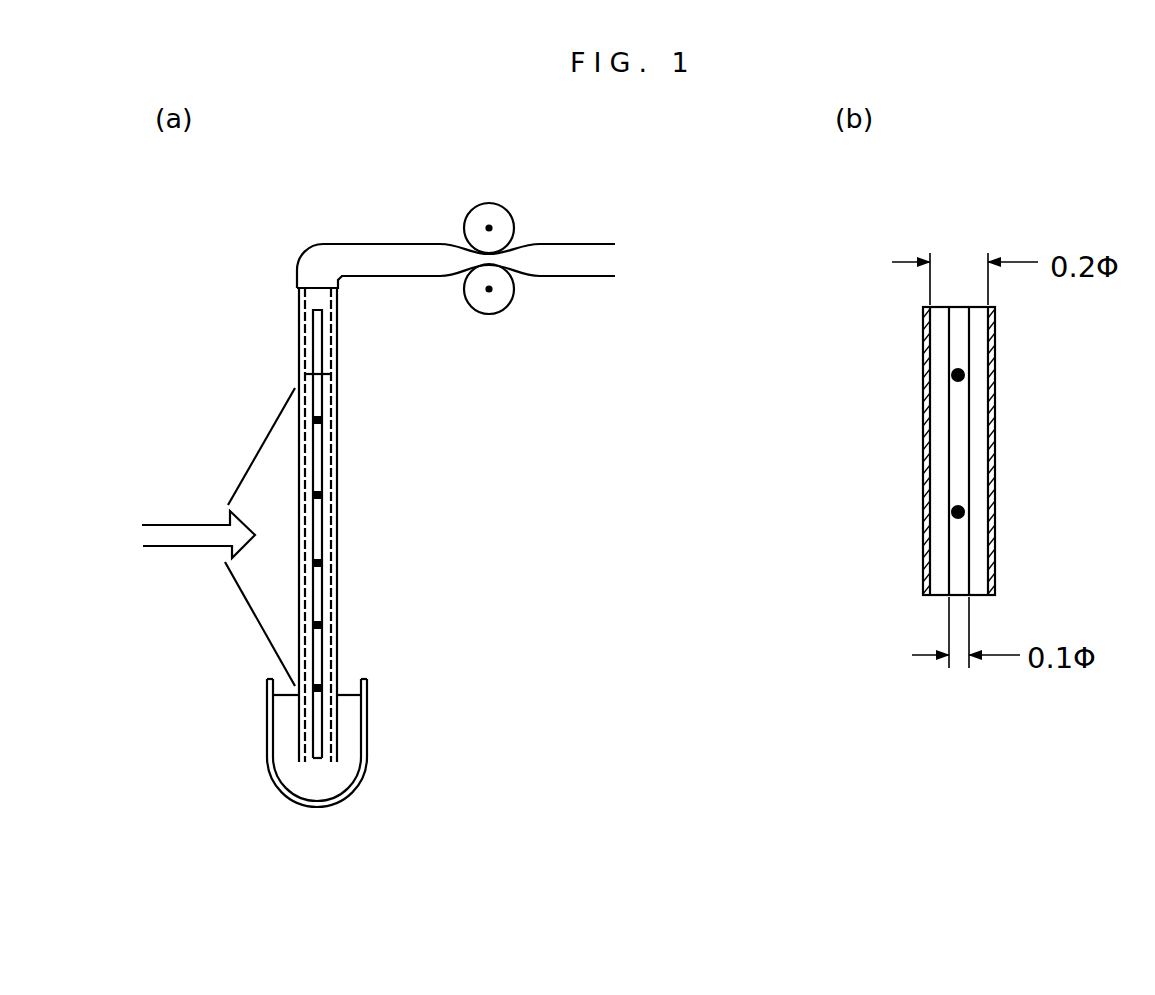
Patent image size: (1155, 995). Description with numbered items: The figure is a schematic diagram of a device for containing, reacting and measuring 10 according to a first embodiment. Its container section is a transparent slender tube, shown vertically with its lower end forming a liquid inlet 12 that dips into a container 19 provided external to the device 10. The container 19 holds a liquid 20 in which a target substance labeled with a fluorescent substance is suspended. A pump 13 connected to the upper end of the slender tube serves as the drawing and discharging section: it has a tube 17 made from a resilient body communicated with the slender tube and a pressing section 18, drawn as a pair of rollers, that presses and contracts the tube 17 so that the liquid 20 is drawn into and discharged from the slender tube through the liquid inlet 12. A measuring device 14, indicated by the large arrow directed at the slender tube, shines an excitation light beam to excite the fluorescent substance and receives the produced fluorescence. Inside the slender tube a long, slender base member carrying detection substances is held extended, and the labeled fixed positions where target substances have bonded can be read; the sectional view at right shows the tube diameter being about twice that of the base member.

The device for containing, reacting and measuring 10 is at (243, 280).
The liquid inlet 12 is at (327, 762).
The pump 13 is at (545, 218).
The measuring device 14 is at (175, 525).
The tube 17 is at (400, 268).
The pressing section 18 is at (487, 204).
The container 19 is at (367, 712).
The liquid 20 is at (282, 740).